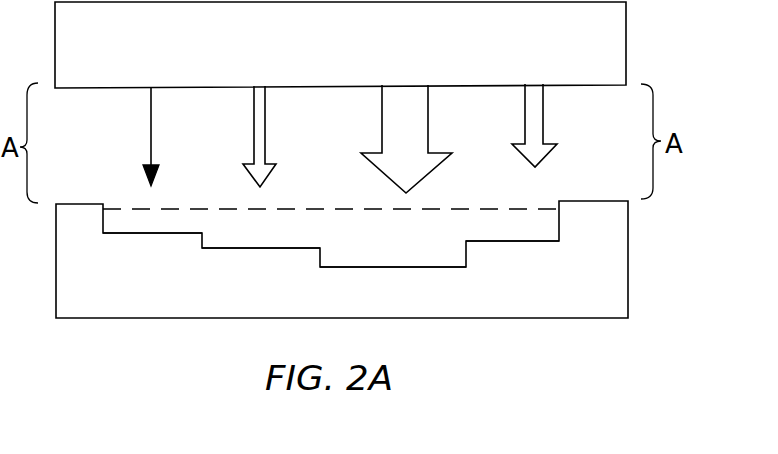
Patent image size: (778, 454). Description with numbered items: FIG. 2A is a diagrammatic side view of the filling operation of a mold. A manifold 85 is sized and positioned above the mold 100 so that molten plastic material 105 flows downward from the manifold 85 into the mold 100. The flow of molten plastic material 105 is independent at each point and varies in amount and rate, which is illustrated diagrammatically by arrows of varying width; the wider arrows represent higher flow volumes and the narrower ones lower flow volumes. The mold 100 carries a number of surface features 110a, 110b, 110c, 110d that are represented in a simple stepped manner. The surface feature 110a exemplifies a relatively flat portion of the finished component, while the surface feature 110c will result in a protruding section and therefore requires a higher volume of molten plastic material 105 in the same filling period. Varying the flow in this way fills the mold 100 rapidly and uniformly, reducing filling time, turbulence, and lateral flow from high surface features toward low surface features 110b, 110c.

The manifold 85 is at (626, 43).
The molten plastic material 105 is at (150, 134).
The mold 100 is at (628, 257).
The surface feature 110a is at (130, 233).
The surface feature 110b is at (243, 248).
The surface feature 110c is at (383, 267).
The surface feature 110d is at (500, 241).